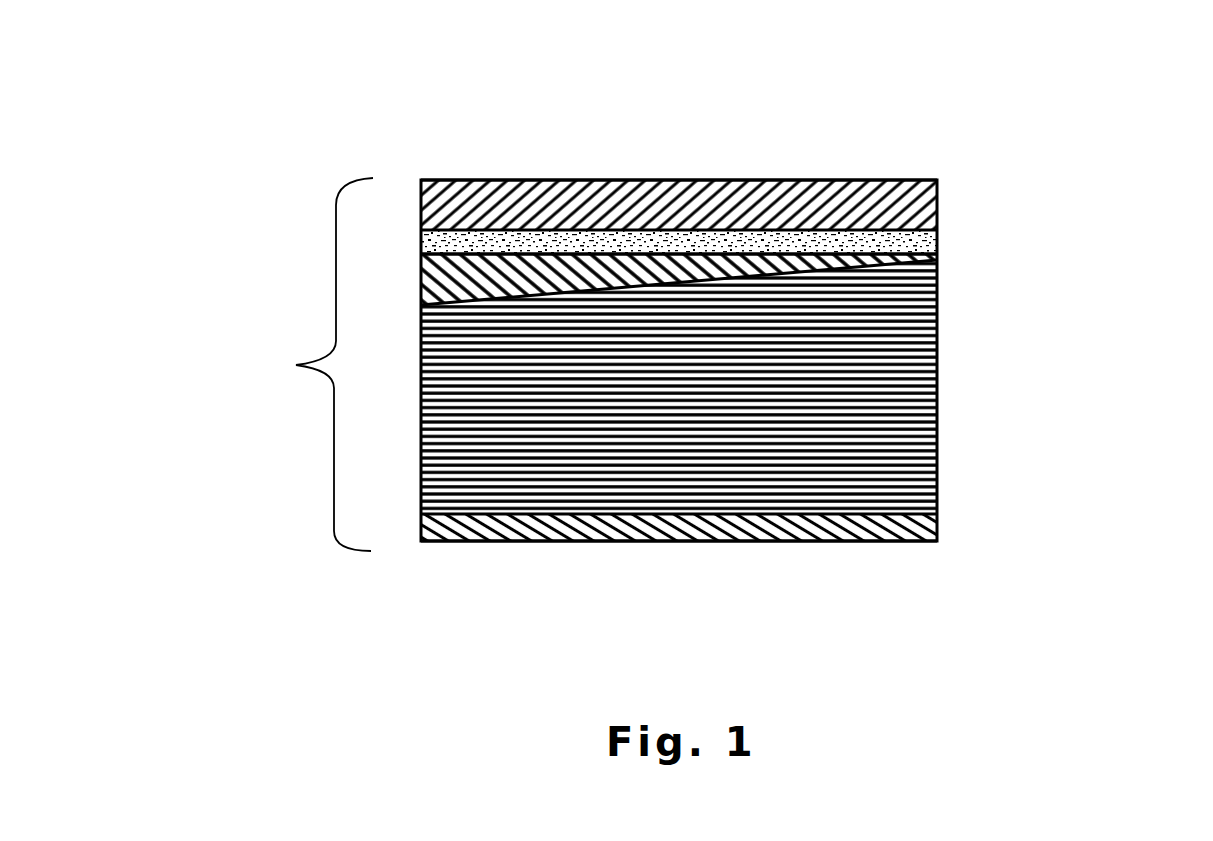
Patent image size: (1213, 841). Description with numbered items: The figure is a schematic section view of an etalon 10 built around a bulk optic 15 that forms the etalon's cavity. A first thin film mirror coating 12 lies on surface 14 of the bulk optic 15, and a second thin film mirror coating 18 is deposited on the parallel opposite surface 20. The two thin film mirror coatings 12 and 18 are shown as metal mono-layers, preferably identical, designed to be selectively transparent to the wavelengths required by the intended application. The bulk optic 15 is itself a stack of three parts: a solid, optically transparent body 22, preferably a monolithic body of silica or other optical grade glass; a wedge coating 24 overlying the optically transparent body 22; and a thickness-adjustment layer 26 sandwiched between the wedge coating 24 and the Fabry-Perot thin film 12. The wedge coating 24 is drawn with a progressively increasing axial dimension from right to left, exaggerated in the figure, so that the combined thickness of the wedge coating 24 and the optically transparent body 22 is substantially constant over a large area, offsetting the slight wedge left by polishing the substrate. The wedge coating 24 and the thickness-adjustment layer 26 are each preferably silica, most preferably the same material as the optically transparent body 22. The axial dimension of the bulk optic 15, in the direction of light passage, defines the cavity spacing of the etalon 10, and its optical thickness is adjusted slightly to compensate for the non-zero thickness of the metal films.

The etalon 10 is at (472, 143).
The first thin film mirror coating 12 is at (929, 200).
The surface 14 is at (613, 218).
The bulk optic 15 is at (300, 364).
The second thin film mirror coating 18 is at (929, 522).
The parallel opposite surface 20 is at (480, 528).
The optically transparent body 22 is at (929, 372).
The wedge coating 24 is at (517, 263).
The thickness-adjustment layer 26 is at (803, 235).